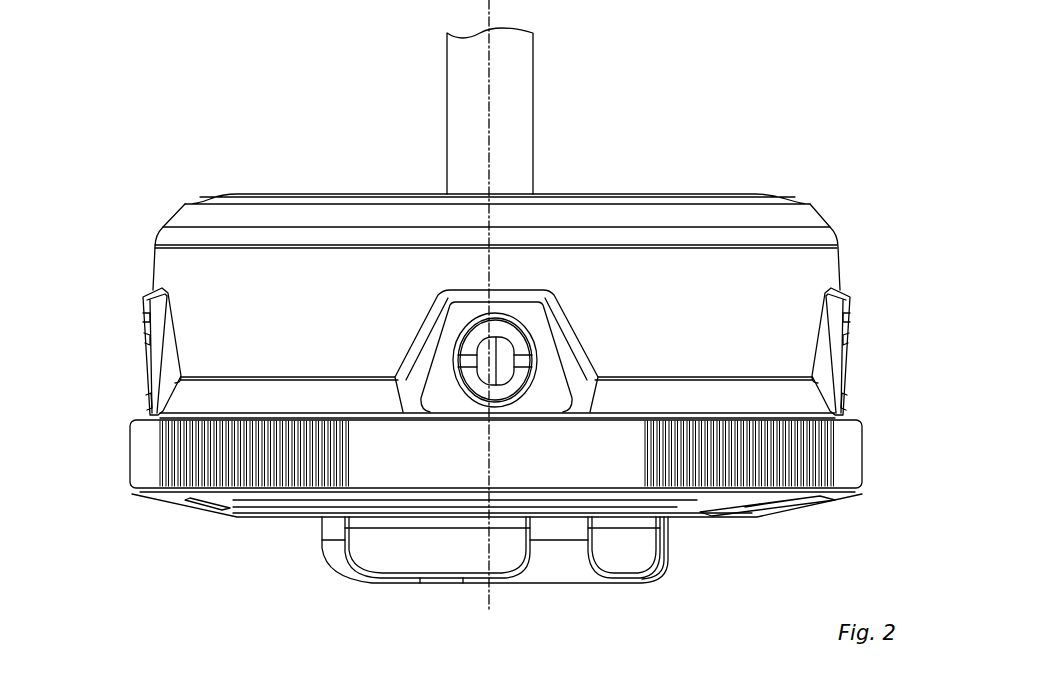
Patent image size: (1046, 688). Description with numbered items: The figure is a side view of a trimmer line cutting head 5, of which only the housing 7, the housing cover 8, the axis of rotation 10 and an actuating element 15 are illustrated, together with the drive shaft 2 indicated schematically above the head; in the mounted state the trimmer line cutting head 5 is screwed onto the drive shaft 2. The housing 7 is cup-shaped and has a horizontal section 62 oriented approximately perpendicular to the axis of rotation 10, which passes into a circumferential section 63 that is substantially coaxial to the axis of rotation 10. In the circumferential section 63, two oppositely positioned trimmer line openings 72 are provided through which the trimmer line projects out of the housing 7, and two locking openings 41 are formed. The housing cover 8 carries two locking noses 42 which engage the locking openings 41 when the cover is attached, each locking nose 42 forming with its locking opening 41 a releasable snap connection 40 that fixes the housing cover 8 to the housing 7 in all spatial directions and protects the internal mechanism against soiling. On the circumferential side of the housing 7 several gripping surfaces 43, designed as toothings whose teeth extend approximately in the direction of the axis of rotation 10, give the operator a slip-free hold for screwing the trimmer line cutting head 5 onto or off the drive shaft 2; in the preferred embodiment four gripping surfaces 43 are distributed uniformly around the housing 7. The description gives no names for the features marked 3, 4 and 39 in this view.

The drive shaft 2 is at (534, 86).
The housing 3 is at (668, 190).
The base 4 is at (708, 523).
The trimmer line cutting head 5 is at (246, 113).
The housing 7 is at (826, 222).
The housing cover 8 is at (150, 496).
The axis of rotation 10 is at (492, 604).
The actuating element 15 is at (334, 573).
The clip foot 39 is at (144, 407).
The snap connection 40 is at (108, 328).
The locking opening 41 is at (138, 318).
The locking nose 42 is at (143, 338).
The gripping surface 43 is at (197, 502).
The horizontal section 62 is at (384, 192).
The circumferential section 63 is at (150, 264).
The trimmer line opening 72 is at (510, 337).